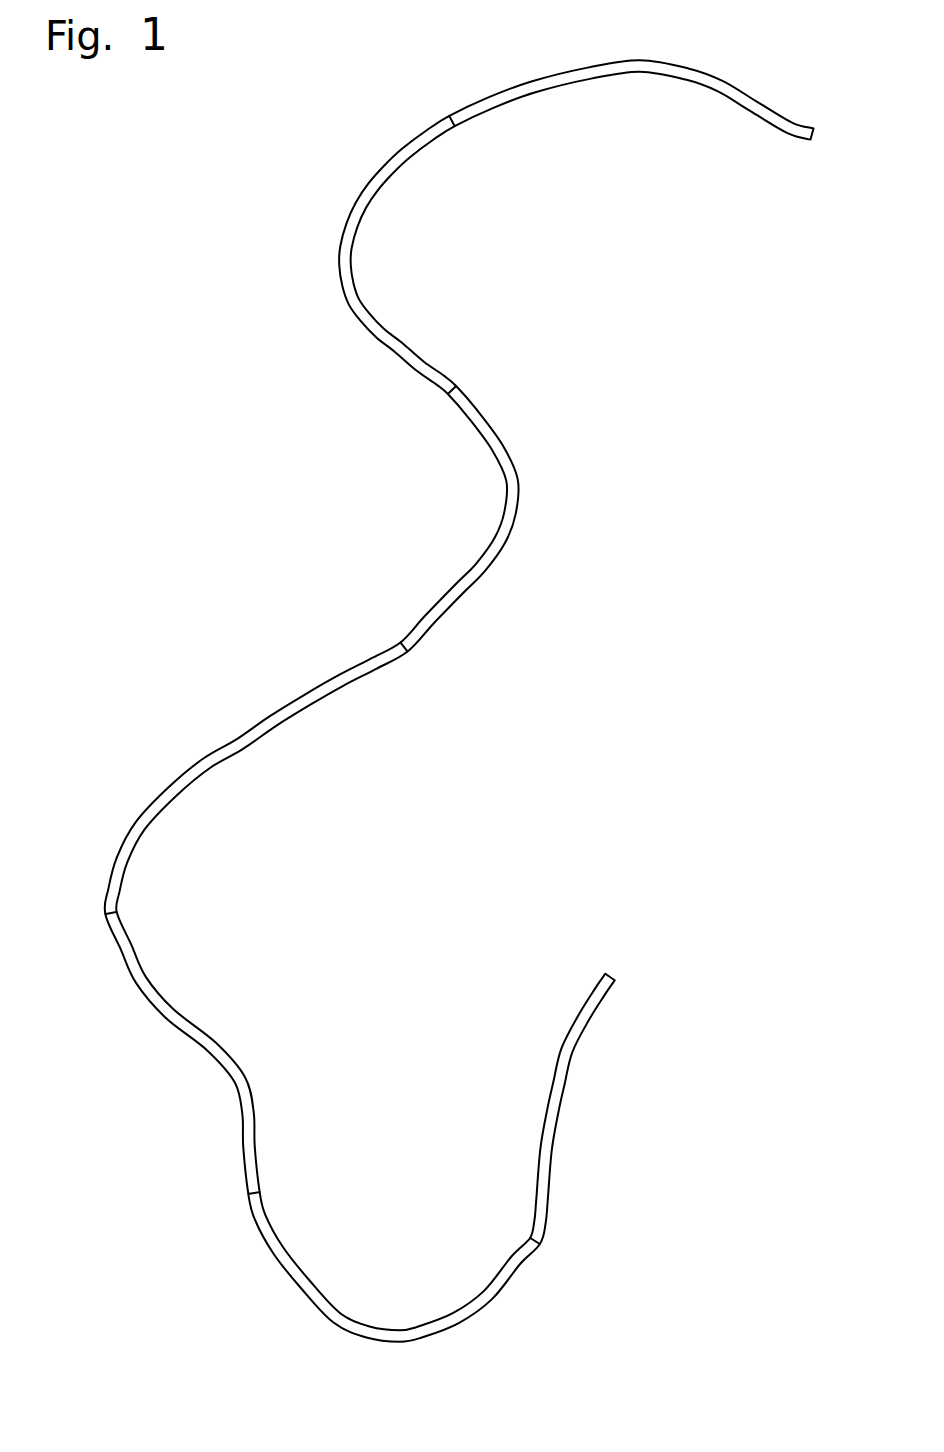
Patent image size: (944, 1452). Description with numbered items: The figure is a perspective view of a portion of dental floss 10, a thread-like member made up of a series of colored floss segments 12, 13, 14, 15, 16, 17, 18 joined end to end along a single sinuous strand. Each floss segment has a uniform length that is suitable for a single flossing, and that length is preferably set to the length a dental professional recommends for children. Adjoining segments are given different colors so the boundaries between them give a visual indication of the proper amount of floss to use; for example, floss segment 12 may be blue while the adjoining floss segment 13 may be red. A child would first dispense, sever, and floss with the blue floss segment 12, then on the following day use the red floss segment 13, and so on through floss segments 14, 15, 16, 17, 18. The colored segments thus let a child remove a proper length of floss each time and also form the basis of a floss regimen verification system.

The dental floss 10 is at (286, 322).
The floss segment 12 is at (583, 64).
The floss segment 13 is at (348, 217).
The floss segment 14 is at (516, 512).
The floss segment 15 is at (203, 773).
The floss segment 16 is at (226, 1051).
The floss segment 17 is at (373, 1329).
The floss segment 18 is at (565, 1083).